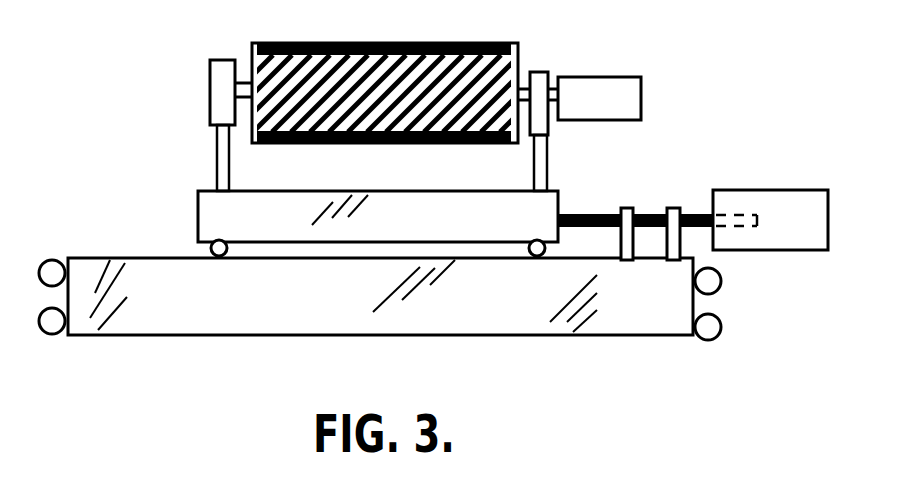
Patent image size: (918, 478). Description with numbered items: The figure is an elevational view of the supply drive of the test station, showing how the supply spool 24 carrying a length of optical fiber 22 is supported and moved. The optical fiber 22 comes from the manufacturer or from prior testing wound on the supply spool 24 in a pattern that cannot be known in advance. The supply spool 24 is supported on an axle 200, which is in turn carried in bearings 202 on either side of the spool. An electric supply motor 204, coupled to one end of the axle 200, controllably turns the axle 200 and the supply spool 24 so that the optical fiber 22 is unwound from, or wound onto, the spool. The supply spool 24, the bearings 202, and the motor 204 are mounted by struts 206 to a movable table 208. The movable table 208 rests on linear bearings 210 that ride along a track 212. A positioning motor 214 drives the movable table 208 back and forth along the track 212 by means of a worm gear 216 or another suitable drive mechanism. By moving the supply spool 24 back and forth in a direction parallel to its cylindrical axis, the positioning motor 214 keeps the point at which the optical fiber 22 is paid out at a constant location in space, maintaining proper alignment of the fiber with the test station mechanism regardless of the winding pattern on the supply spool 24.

The optical fiber 22 is at (312, 42).
The supply spool 24 is at (252, 50).
The axle 200 is at (242, 83).
The bearings 202 is at (210, 86).
The electric supply motor 204 is at (592, 120).
The struts 206 is at (217, 152).
The movable table 208 is at (198, 215).
The linear bearings 210 is at (217, 256).
The track 212 is at (297, 313).
The positioning motor 214 is at (797, 252).
The worm gear 216 is at (648, 208).